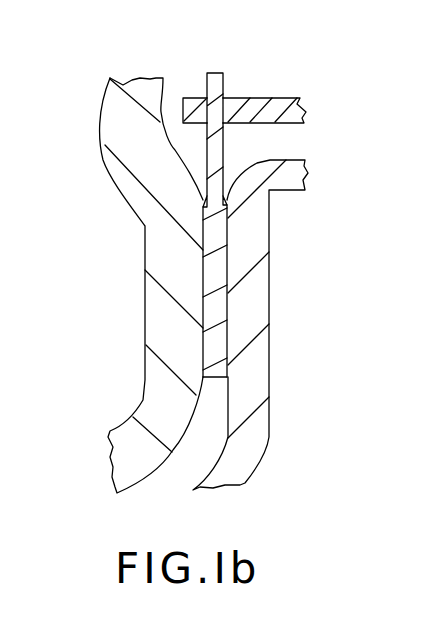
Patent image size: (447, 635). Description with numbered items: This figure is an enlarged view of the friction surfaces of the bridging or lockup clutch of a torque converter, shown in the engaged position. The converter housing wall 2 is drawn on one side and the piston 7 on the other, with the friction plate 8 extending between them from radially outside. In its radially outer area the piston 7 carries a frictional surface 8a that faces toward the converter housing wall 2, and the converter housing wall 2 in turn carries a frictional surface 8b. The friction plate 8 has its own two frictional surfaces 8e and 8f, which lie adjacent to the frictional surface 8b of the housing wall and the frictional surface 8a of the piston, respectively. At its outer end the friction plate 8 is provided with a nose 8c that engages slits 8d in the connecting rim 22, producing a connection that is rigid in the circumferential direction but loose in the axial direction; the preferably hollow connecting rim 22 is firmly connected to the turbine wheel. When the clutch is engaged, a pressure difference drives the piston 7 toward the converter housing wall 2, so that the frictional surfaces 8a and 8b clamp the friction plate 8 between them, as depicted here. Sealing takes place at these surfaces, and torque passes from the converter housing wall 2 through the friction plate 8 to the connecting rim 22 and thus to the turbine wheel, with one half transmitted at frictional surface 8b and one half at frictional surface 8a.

The converter housing wall 2 is at (163, 293).
The piston 7 is at (258, 320).
The friction plate 8 is at (215, 258).
The frictional surface 8a is at (227, 225).
The frictional surface 8b is at (203, 228).
The nose 8c is at (218, 72).
The slits 8d is at (225, 97).
The frictional surface 8e is at (203, 200).
The frictional surface 8f is at (227, 208).
The connecting rim 22 is at (293, 98).